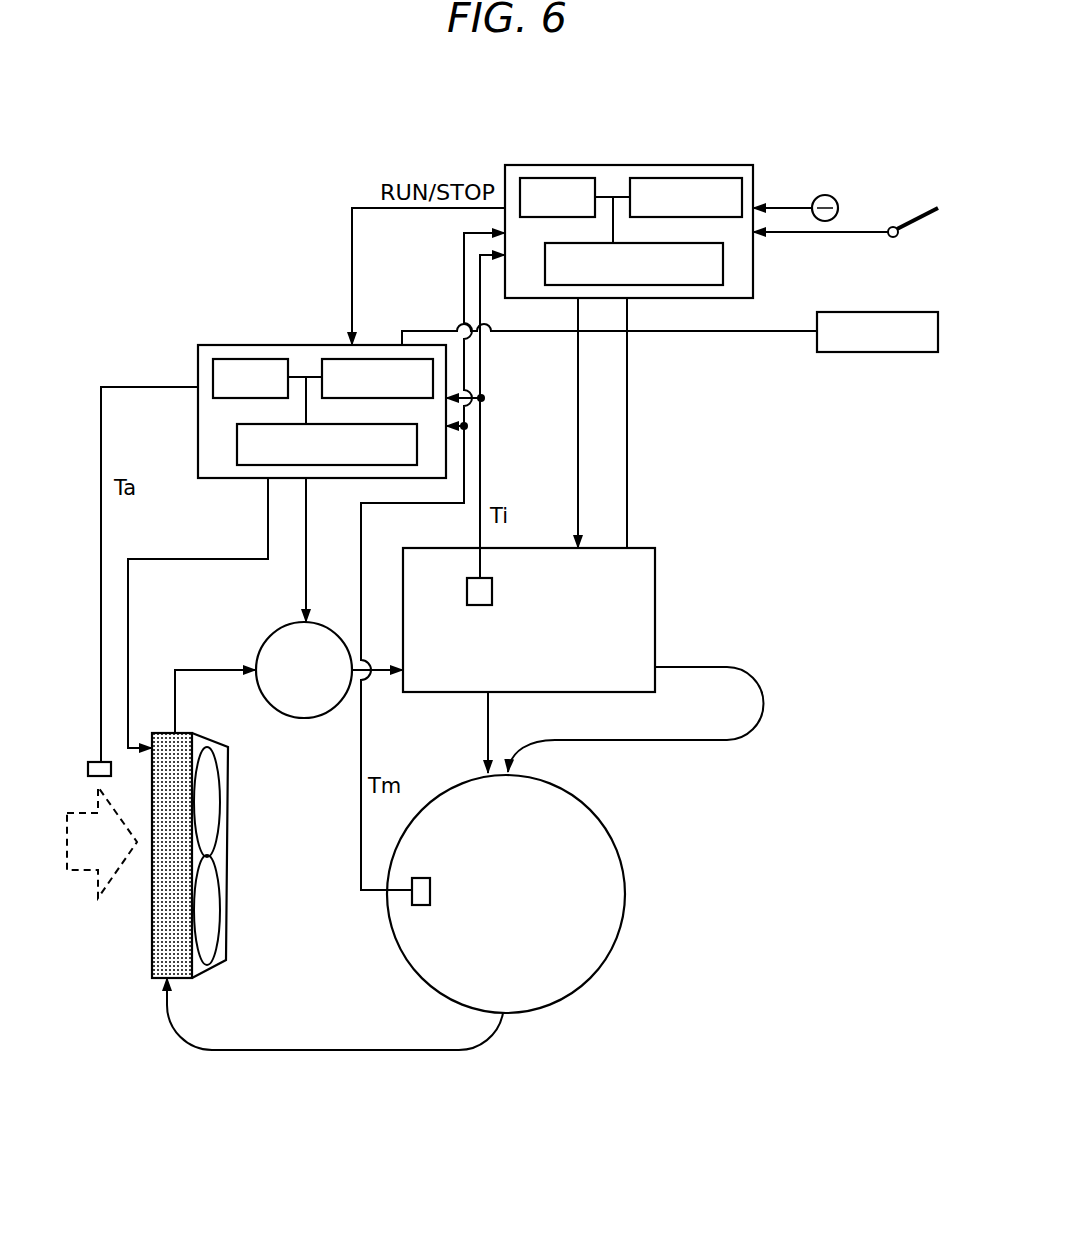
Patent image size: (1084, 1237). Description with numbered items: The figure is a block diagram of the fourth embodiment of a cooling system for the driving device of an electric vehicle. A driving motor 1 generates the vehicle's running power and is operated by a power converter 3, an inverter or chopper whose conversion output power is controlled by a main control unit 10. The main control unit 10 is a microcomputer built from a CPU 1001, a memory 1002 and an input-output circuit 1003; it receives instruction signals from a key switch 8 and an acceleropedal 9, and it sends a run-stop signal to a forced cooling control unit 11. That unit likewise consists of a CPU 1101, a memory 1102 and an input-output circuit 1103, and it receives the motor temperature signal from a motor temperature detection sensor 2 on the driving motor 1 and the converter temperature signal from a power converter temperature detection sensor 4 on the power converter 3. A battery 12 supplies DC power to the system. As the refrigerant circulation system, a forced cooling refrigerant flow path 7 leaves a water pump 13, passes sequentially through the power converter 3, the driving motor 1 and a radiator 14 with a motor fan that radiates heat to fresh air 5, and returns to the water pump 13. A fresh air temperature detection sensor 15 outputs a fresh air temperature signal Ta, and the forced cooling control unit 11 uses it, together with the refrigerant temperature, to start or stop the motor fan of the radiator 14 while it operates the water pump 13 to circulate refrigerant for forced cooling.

The driving motor 1 is at (624, 890).
The motor temperature detection sensor 2 is at (411, 898).
The power converter 3 is at (657, 558).
The power converter temperature detection sensor 4 is at (493, 588).
The fresh air 5 is at (96, 873).
The forced cooling refrigerant flow path 7 is at (377, 675).
The key switch 8 is at (832, 196).
The acceleropedal 9 is at (917, 218).
The main control unit 10 is at (640, 165).
The forced cooling control unit 11 is at (318, 345).
The battery 12 is at (906, 312).
The water pump 13 is at (270, 638).
The radiator 14 is at (228, 825).
The fresh air temperature detection sensor 15 is at (90, 760).
The CPU 1001 is at (576, 178).
The memory 1002 is at (713, 178).
The input-output circuit 1003 is at (723, 265).
The CPU 1101 is at (268, 359).
The memory 1102 is at (381, 359).
The input-output circuit 1103 is at (237, 441).